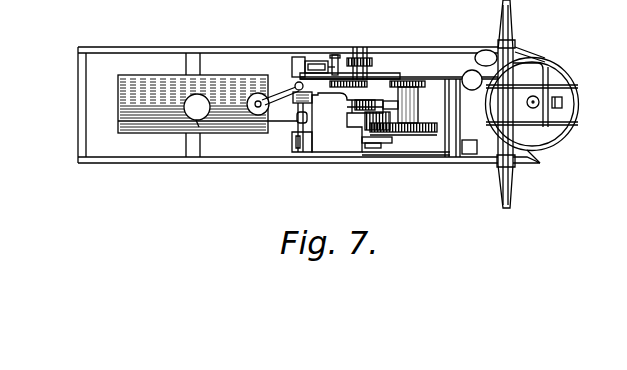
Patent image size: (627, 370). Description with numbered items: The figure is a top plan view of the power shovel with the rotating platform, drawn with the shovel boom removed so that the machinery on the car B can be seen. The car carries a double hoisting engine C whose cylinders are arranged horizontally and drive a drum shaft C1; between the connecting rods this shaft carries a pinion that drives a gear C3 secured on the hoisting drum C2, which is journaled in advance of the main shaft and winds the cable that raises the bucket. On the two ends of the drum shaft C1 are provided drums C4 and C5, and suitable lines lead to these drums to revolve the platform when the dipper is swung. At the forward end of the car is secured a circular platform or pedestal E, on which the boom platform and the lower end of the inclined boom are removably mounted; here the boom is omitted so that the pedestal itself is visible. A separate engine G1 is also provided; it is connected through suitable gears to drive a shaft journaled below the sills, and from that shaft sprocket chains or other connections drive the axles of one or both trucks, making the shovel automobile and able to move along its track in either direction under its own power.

The carriage frame B is at (262, 105).
The crank C is at (296, 90).
The drum shaft C1 is at (303, 118).
The hoisting drum C2 is at (455, 35).
The gear C3 is at (423, 132).
The drum C4 is at (360, 175).
The drum C5 is at (380, 131).
The engine G1 is at (301, 62).
The circular platform or pedestal E is at (526, 104).